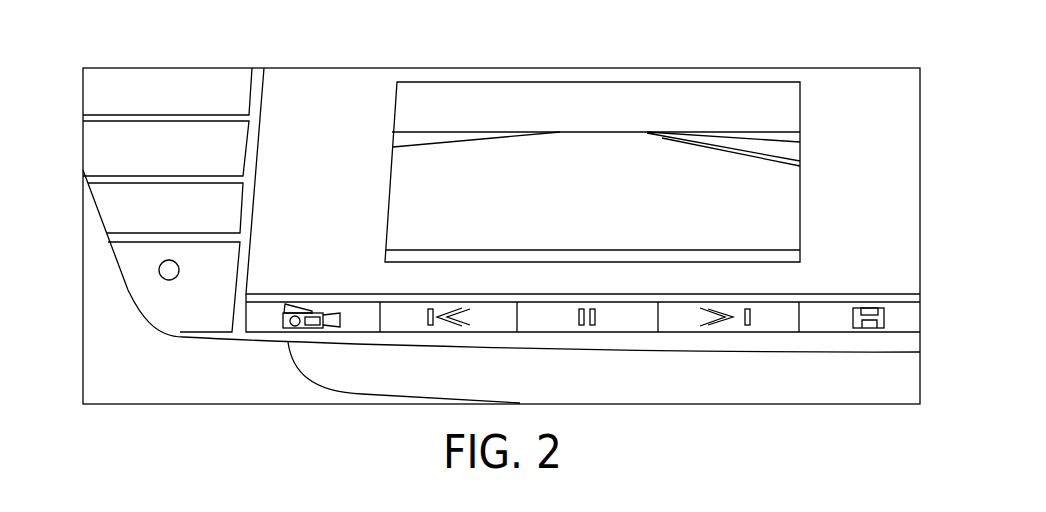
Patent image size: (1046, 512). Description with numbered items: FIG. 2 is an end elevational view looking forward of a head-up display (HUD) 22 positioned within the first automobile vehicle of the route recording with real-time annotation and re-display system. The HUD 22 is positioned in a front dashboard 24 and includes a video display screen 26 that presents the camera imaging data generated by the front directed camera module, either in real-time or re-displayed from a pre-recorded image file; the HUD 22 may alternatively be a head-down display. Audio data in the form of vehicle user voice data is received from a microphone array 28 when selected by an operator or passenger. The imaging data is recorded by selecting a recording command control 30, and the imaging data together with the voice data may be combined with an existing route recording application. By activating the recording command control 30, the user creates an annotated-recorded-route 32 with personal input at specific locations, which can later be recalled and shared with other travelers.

The head-up display 22 is at (878, 90).
The front dashboard 24 is at (120, 298).
The video display screen 26 is at (737, 105).
The microphone array 28 is at (160, 267).
The recording command control 30 is at (312, 313).
The annotated-recorded-route 32 is at (880, 313).